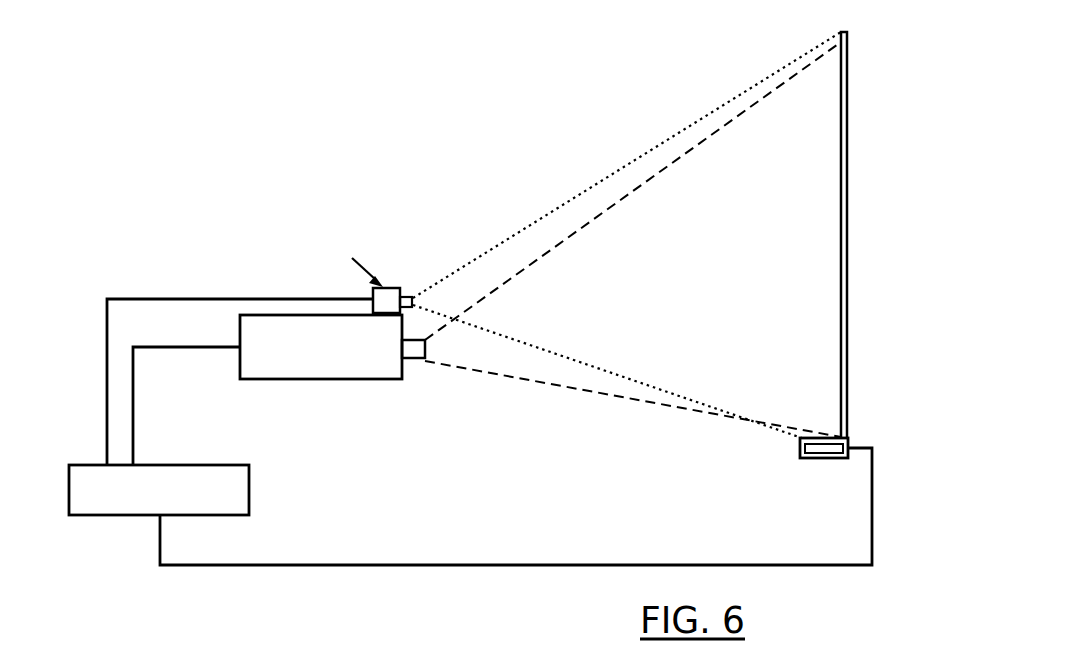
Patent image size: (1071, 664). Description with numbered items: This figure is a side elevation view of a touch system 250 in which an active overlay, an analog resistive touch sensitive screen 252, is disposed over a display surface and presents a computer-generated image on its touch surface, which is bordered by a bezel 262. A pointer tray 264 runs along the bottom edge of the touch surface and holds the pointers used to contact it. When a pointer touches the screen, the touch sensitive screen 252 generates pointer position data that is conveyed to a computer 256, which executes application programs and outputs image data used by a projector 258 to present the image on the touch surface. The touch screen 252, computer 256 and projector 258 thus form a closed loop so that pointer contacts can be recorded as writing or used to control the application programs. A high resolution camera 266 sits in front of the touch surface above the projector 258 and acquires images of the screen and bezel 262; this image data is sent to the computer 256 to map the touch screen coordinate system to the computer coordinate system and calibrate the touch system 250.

The touch system 250 is at (292, 156).
The touch sensitive screen 252 is at (862, 123).
The computer 256 is at (249, 490).
The projector 258 is at (343, 372).
The bezel 262 is at (848, 288).
The pointer tray 264 is at (825, 458).
The high resolution camera 266 is at (397, 289).